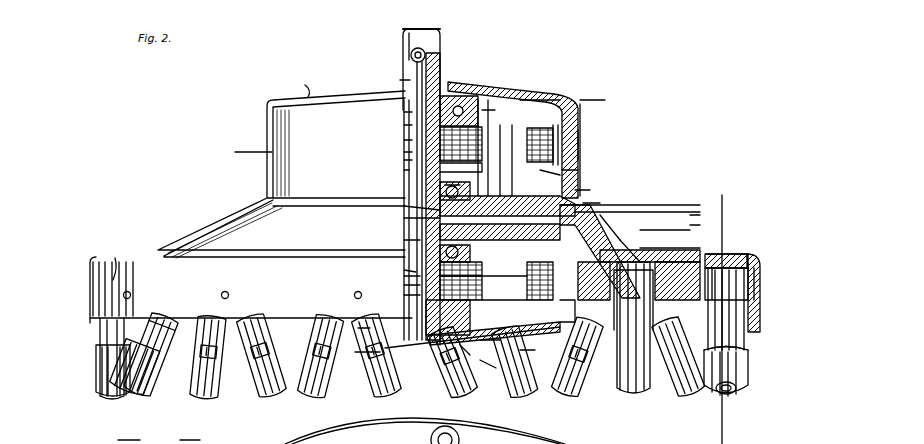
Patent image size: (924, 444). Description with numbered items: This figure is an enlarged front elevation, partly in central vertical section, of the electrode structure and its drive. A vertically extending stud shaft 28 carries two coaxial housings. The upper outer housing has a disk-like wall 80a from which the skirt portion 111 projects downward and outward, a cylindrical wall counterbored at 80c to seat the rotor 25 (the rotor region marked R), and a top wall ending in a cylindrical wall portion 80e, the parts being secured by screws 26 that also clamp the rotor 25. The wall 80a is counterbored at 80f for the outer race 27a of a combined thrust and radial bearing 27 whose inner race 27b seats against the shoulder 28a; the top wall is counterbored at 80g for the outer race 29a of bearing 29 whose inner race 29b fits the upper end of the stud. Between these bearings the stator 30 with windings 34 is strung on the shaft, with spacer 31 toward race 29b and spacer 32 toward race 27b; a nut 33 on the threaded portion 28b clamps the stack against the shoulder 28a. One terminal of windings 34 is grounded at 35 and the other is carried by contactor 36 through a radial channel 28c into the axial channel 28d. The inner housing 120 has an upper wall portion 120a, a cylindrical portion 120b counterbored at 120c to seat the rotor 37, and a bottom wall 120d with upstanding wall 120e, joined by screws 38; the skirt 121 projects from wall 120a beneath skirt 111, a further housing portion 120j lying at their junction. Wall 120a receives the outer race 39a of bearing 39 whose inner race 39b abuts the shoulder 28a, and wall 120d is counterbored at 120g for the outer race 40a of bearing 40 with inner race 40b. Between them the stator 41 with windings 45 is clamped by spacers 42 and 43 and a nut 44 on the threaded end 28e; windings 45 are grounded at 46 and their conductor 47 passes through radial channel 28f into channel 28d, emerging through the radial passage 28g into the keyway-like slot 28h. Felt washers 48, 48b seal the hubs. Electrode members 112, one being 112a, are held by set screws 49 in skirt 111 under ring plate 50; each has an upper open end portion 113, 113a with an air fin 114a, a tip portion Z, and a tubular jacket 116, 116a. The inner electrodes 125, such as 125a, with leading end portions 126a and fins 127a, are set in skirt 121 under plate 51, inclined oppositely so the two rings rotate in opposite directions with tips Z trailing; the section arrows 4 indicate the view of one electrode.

The section line 4 is at (730, 426).
The rotor 25 is at (580, 166).
The screws 26 is at (580, 104).
The combined thrust and radial anti-friction bearing 27 is at (413, 214).
The outer race 27a is at (507, 205).
The inner race 27b is at (404, 240).
The stud shaft 28 is at (400, 72).
The shoulder 28a is at (500, 230).
The threaded portion 28b is at (400, 80).
The radial channel 28c is at (474, 161).
The axially extending channel 28d is at (404, 170).
The threaded lower end portion 28e is at (353, 371).
The radial channel 28f is at (404, 285).
The radial passage 28g is at (440, 52).
The keyway-like slot 28h is at (427, 68).
The combined thrust and radial anti-friction bearing 29 is at (404, 125).
The outer race 29a is at (404, 140).
The inner race 29b is at (404, 112).
The stator 30 is at (404, 160).
The ring or spacer 31 is at (412, 152).
The spacer 32 is at (404, 208).
The threaded nut or collar 33 is at (483, 100).
The windings 34 is at (520, 140).
The ground 35 is at (470, 144).
The contactor 36 is at (458, 96).
The rotor 37 is at (540, 332).
The screws 38 is at (565, 330).
The combined thrust and radial bearing 39 is at (446, 250).
The outer race 39a is at (485, 222).
The inner race 39b is at (404, 270).
The combined radial and thrust anti-friction bearing 40 is at (430, 344).
The outer race 40a is at (460, 346).
The inner race 40b is at (370, 365).
The stator 41 is at (415, 292).
The collar or spacer 42 is at (404, 276).
The collar or spacer 43 is at (440, 302).
The nut or collar 44 is at (440, 345).
The windings 45 is at (496, 281).
The ground 46 is at (504, 292).
The conductor 47 is at (469, 264).
The felt washers 48 is at (506, 125).
The pin 48b is at (488, 370).
The set screw 49 is at (778, 290).
The ring-like plate 50 is at (776, 252).
The ring-like plate 51 is at (680, 225).
The disk-like wall 80a is at (585, 205).
The counterbore 80c is at (580, 150).
The cylindrical wall portion 80e is at (580, 118).
The counterbore 80f is at (560, 178).
The counterbore 80g is at (495, 111).
The bearing R is at (553, 145).
The skirt portion 111 is at (668, 240).
The electrode member 112 is at (106, 385).
The electrode member 112a is at (745, 320).
The upper open end portion 113 is at (160, 318).
The upper open end portion 113a is at (748, 270).
The fin 114a is at (720, 254).
The tubular jacket 116 is at (145, 392).
The tubular jacket 116a is at (748, 368).
The inner rotatable housing 120 is at (604, 227).
The upper wall portion 120a is at (630, 230).
The cylindrical portion 120b is at (594, 284).
The counterbore 120c is at (602, 227).
The bottom closing wall portion 120d is at (530, 365).
The cylindrical wall portion 120e is at (624, 380).
The counterbore 120g is at (495, 360).
The arm web 120j is at (631, 216).
The skirt portion 121 is at (636, 250).
The electrode member 125 is at (192, 350).
The electrode member 125a is at (722, 395).
The upper end portion 126a is at (680, 252).
The air fin 127a is at (670, 248).
The tip portion Z is at (738, 388).